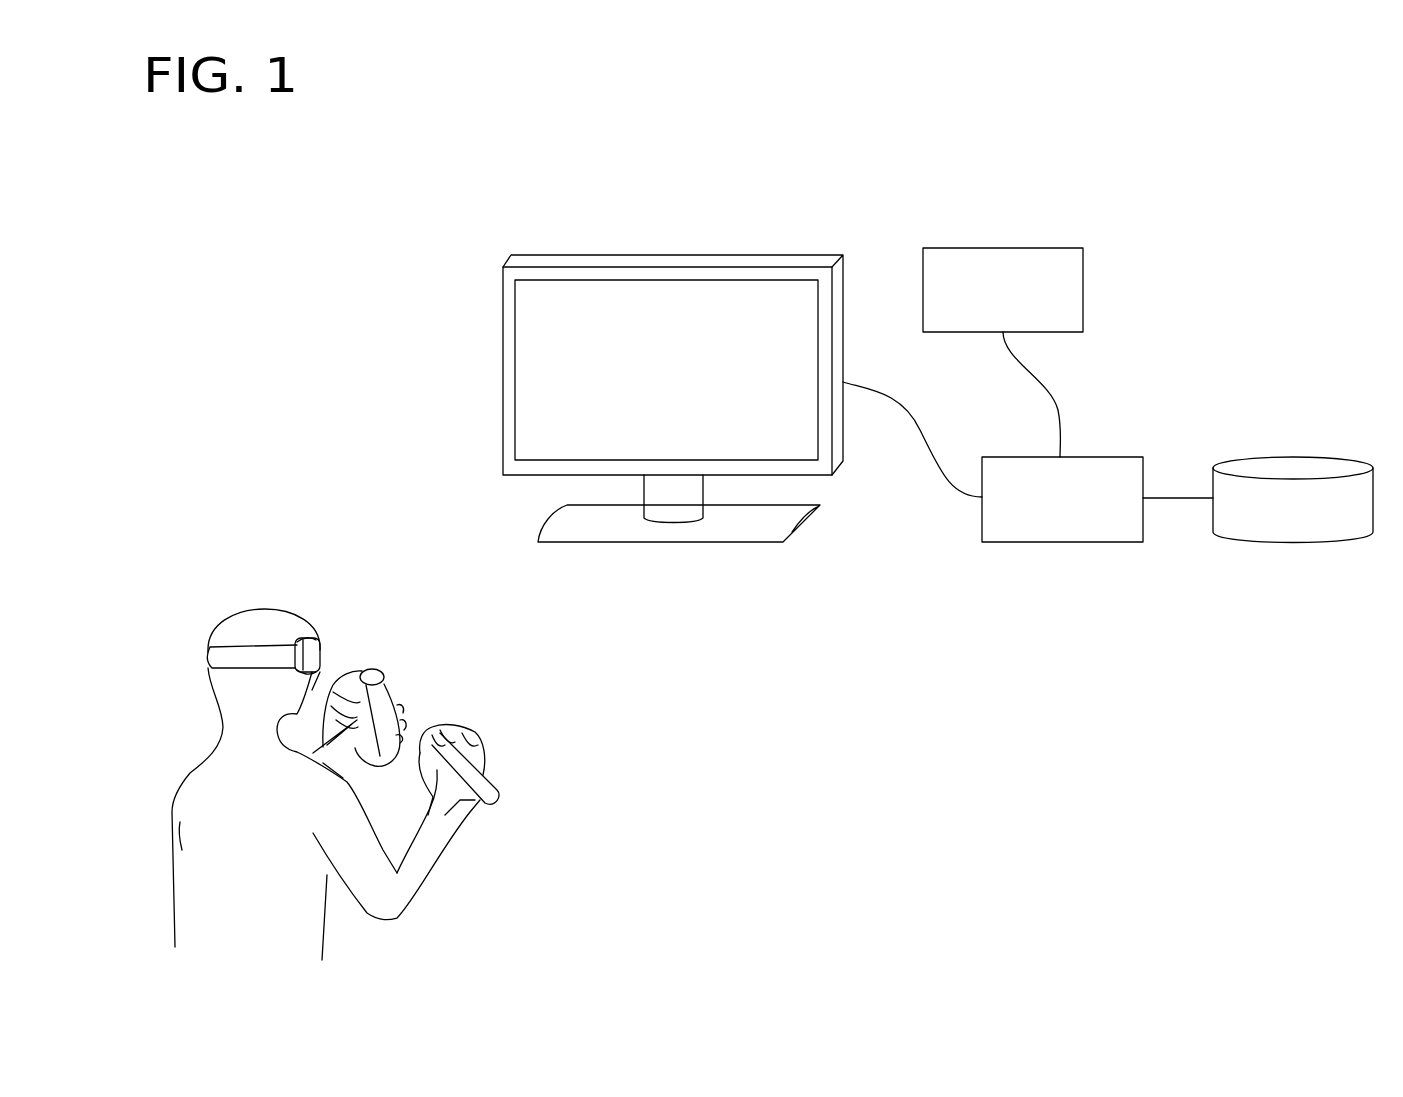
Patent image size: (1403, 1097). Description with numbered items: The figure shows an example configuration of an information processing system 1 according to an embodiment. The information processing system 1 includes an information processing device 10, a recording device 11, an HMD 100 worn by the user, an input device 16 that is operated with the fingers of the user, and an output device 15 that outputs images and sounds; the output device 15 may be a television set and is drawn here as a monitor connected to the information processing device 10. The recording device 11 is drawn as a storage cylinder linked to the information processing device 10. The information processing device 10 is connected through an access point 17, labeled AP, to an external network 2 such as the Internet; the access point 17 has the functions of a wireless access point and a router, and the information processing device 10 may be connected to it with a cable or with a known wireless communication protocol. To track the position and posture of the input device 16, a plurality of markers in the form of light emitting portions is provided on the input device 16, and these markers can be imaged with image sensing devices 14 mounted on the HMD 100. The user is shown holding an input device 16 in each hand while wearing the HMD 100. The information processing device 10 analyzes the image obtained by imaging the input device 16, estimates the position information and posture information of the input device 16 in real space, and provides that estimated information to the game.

The information processing system 1 is at (756, 973).
The external network 2 is at (1003, 248).
The information processing device 10 is at (1113, 457).
The recording device 11 is at (1334, 468).
The image sensing devices 14 is at (331, 637).
The output device 15 is at (502, 371).
The input device 16 is at (373, 672).
The access point 17 is at (1053, 248).
The HMD 100 is at (210, 657).